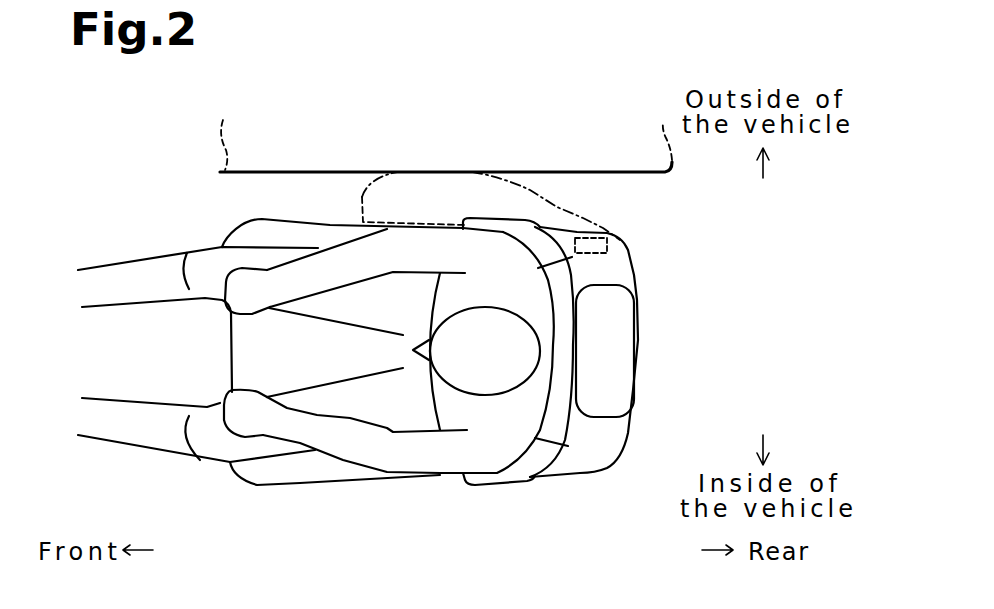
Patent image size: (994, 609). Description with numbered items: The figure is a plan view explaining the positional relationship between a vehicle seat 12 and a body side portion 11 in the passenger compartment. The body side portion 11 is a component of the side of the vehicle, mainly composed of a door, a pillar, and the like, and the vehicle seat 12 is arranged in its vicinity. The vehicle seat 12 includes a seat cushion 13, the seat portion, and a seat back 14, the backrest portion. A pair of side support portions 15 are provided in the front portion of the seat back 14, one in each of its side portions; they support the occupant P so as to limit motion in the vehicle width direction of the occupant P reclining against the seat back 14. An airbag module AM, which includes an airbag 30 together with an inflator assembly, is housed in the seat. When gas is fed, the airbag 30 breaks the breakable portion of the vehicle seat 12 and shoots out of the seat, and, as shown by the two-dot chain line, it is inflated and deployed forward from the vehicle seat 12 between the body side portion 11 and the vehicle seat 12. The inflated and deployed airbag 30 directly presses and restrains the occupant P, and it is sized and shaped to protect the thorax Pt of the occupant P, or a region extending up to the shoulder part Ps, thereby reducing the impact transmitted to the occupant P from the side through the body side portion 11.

The body side portion 11 is at (241, 173).
The vehicle seat 12 is at (630, 418).
The seat cushion 13 is at (232, 349).
The seat back 14 is at (634, 372).
The side support portions 15 is at (577, 233).
The airbag 30 is at (362, 197).
The airbag module AM is at (608, 245).
The occupant P is at (552, 330).
The shoulder part Ps is at (518, 279).
The thorax Pt is at (437, 393).